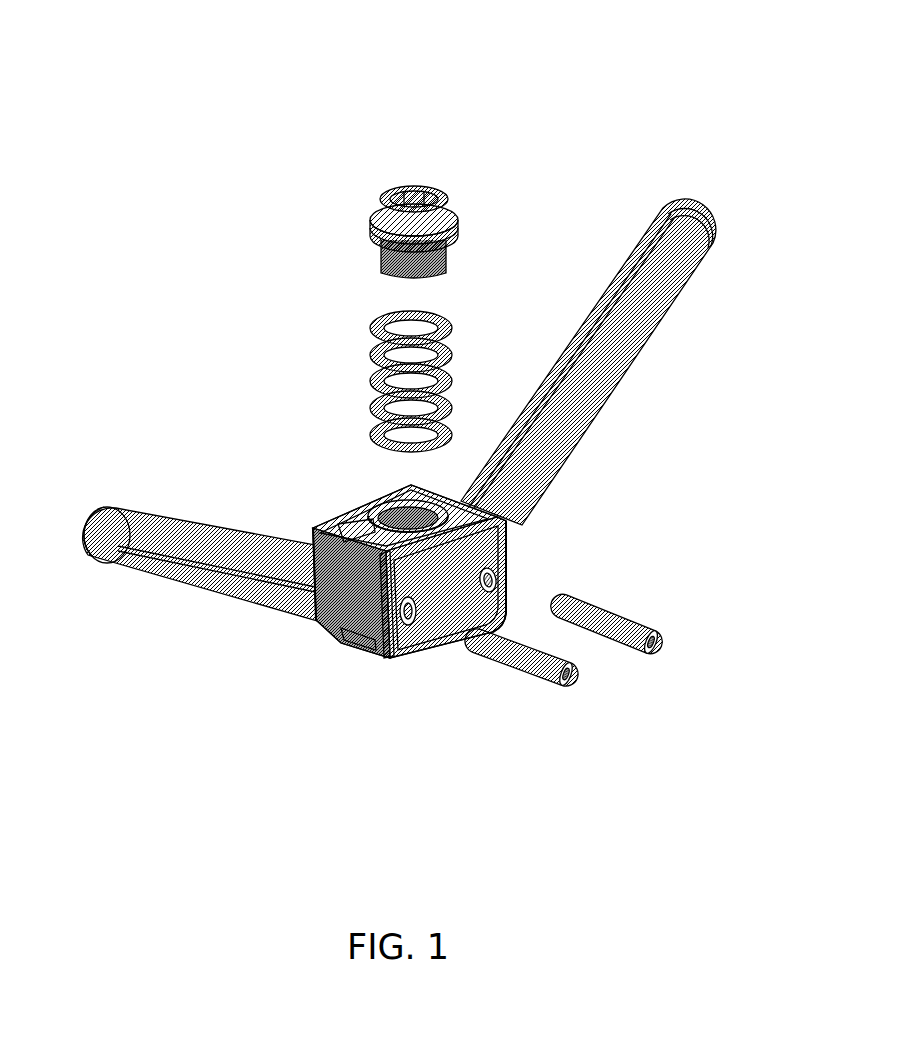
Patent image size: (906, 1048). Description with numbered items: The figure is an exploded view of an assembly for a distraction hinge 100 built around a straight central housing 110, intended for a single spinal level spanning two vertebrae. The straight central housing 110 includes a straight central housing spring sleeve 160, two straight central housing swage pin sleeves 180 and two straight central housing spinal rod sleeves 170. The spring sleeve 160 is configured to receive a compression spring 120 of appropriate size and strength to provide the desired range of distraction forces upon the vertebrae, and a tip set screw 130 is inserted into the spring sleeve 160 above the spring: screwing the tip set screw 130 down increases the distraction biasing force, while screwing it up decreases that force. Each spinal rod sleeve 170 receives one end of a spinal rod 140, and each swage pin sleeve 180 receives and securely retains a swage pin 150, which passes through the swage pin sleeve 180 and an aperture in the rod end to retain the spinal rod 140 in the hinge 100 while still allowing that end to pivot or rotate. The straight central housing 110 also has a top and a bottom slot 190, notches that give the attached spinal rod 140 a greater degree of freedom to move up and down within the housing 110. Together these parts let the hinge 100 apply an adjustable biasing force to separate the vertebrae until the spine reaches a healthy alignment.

The distraction hinge 100 is at (147, 104).
The straight central housing 110 is at (430, 655).
The compression spring 120 is at (348, 360).
The tip set screw 130 is at (336, 204).
The spinal rod 140 is at (556, 292).
The swage pin 150 is at (580, 676).
The straight central housing spring sleeve 160 is at (370, 468).
The straight central housing spinal rod sleeve 170 is at (507, 538).
The straight central housing swage pin sleeve 180 is at (486, 572).
The slot 190 is at (335, 516).